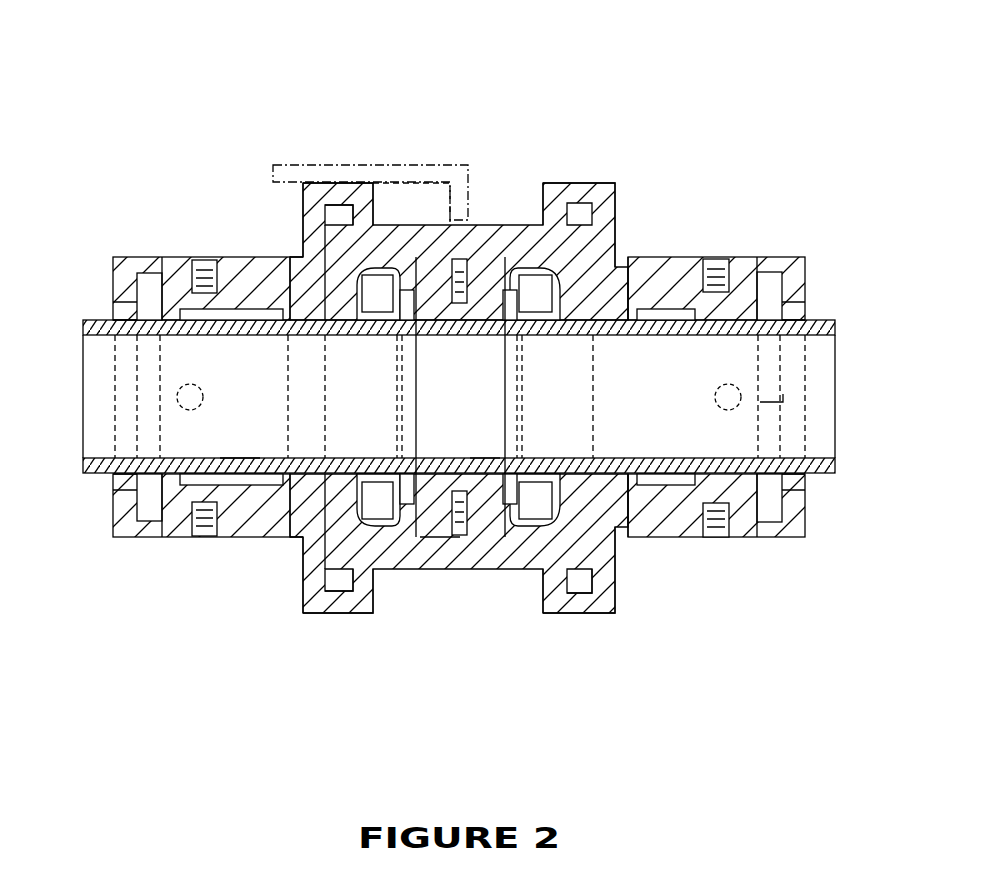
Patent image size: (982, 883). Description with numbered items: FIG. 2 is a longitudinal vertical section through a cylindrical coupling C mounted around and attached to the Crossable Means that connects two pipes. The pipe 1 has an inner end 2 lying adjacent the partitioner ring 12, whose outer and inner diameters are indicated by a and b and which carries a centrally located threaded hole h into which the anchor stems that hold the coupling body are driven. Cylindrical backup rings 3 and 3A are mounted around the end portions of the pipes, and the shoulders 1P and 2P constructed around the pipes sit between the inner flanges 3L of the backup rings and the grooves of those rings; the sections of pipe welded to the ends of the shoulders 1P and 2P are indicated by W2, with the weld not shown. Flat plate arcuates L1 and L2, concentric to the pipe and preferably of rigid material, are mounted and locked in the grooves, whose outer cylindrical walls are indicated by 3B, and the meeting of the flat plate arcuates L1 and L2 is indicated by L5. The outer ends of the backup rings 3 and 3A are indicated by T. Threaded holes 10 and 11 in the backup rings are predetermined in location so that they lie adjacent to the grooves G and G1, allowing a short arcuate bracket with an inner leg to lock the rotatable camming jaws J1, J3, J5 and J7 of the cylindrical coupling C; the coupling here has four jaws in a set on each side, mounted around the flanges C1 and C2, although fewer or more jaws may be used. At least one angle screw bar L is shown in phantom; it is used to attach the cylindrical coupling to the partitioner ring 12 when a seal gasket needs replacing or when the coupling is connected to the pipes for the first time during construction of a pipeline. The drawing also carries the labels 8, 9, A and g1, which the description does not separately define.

The pipe 1 is at (85, 327).
The shoulder 1P is at (228, 458).
The inner end of pipe 2 is at (413, 470).
The shoulder 2P is at (703, 324).
The cylindrical backup ring 3 is at (192, 305).
The cylindrical backup ring 3A is at (660, 300).
The outer cylindrical wall of groove 3B is at (142, 257).
The inner flange of backup ring 3L is at (297, 336).
The seal 8 is at (380, 326).
The seal member 9 is at (541, 323).
The threaded opening 10 is at (190, 258).
The threaded opening 11 is at (714, 300).
The partitioner ring 12 is at (480, 458).
The housing A is at (540, 240).
The cylindrical coupling C is at (483, 225).
The flange of cylindrical coupling C1 is at (340, 238).
The flange of cylindrical coupling C2 is at (612, 605).
The groove G is at (297, 258).
The groove G1 is at (624, 290).
The gap g1 is at (130, 345).
The rotatable camming jaw J1 is at (340, 195).
The rotatable camming jaw J3 is at (345, 592).
The rotatable camming jaw J5 is at (592, 195).
The rotatable camming jaw J7 is at (585, 614).
The angle screw bar L is at (398, 165).
The flat plate arcuate L1 is at (143, 285).
The flat plate arcuate L2 is at (160, 492).
The meeting of flat plate arcuates L5 is at (150, 398).
The outer end of backup ring T is at (112, 289).
The welded pipe section W2 is at (245, 322).
The outer diameter of partitioner ring a is at (440, 522).
The inner diameter of partitioner ring b is at (455, 325).
The threaded hole h is at (462, 305).